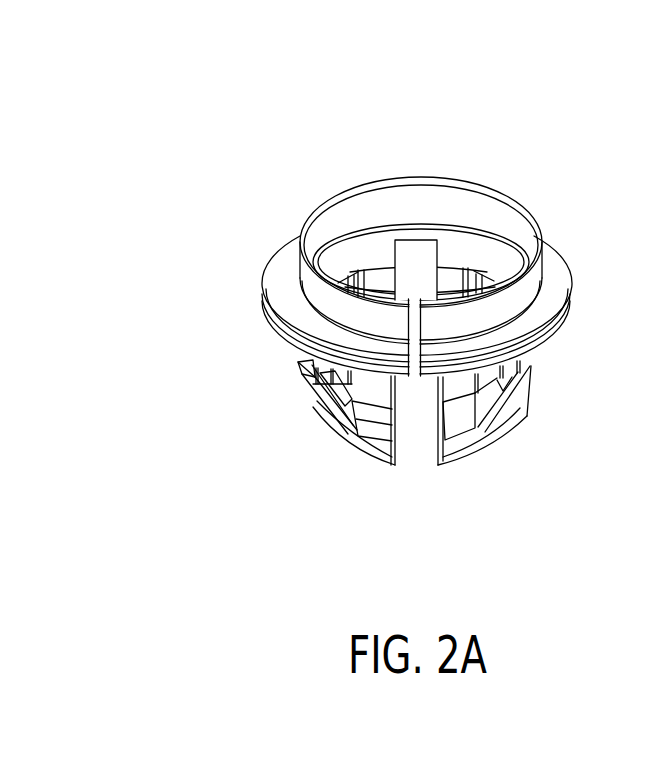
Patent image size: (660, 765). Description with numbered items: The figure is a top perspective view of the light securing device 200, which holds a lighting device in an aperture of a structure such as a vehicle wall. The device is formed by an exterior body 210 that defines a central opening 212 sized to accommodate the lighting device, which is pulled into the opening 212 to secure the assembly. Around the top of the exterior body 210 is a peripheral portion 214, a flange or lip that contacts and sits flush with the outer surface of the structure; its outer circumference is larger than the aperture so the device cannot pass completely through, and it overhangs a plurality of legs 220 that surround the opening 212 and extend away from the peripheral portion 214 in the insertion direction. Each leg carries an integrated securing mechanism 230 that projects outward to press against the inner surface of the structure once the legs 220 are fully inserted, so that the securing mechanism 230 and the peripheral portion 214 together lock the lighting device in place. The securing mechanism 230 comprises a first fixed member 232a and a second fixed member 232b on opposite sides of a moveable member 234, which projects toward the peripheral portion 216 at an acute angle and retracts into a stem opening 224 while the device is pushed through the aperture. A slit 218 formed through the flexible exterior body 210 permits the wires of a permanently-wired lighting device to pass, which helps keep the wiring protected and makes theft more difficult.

The light securing device 200 is at (197, 108).
The exterior body 210 is at (168, 155).
The opening 212 is at (415, 271).
The peripheral portion 214 is at (276, 282).
The peripheral portion 216 is at (328, 205).
The slit 218 is at (415, 383).
The legs 220 is at (503, 434).
The stem opening 224 is at (497, 376).
The securing mechanism 230 is at (393, 518).
The first fixed member 232a is at (299, 366).
The second fixed member 232b is at (372, 420).
The moveable member 234 is at (334, 395).